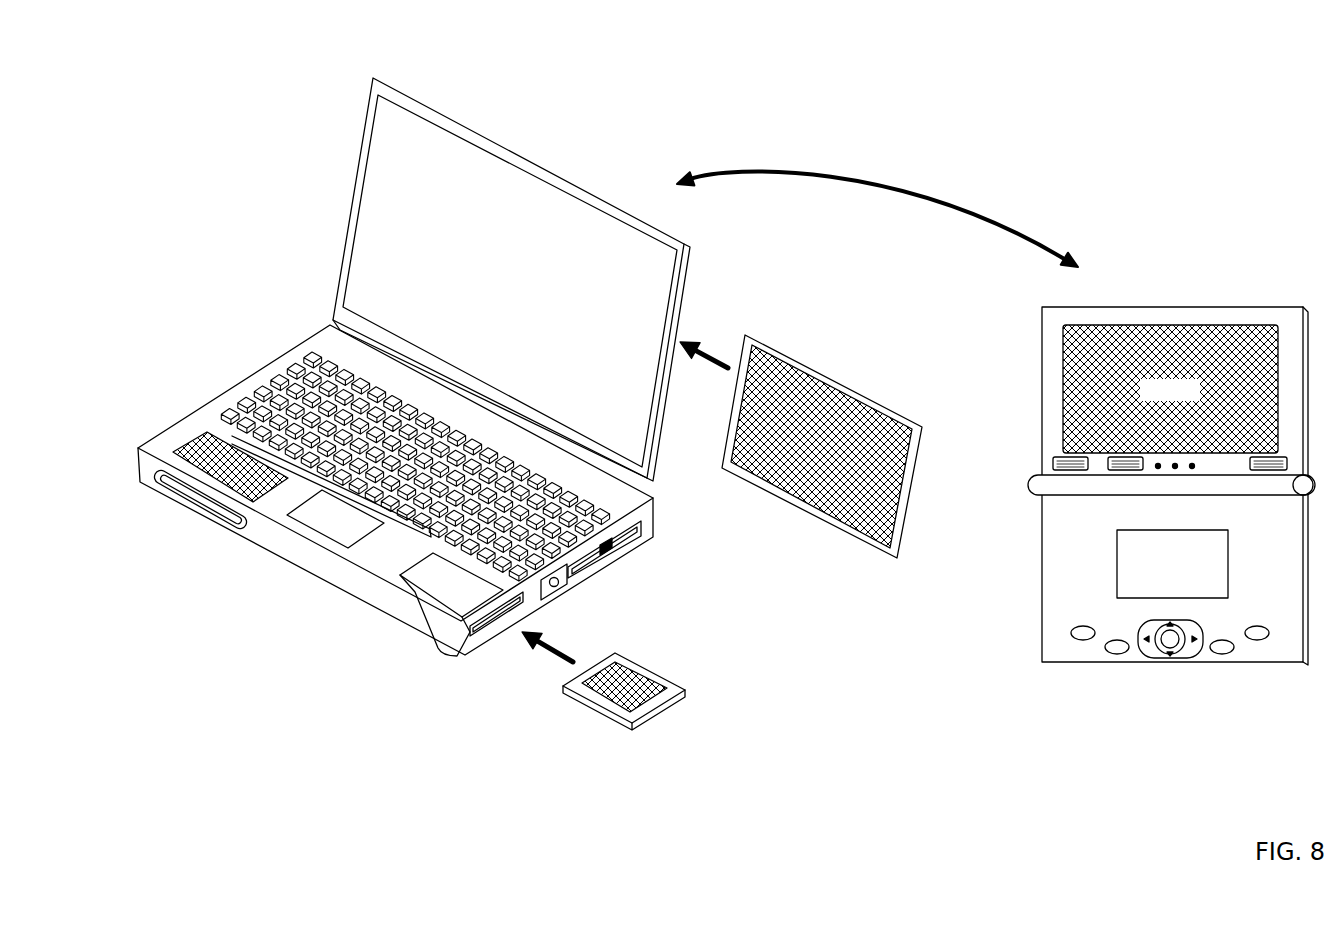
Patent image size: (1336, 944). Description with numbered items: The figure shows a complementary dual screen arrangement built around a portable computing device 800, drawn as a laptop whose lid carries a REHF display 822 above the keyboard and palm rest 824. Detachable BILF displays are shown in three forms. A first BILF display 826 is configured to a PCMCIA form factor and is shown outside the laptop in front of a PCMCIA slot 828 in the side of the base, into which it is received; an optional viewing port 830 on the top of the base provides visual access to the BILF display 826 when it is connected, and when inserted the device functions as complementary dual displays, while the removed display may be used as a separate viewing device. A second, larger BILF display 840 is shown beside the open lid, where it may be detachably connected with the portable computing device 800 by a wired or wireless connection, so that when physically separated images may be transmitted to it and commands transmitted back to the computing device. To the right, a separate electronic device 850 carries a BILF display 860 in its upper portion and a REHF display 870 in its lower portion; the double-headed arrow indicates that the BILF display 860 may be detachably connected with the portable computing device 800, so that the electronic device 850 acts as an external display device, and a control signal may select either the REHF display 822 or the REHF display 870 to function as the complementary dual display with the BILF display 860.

The portable computing device 800 is at (414, 442).
The REHF display 822 is at (363, 173).
The wireless antenna module 824 is at (270, 497).
The BILF display 826 is at (668, 708).
The PCMCIA slot 828 is at (472, 633).
The viewing port 830 is at (418, 596).
The BILF display 840 is at (917, 490).
The electronic device 850 is at (1171, 451).
The BILF display 860 is at (1170, 389).
The REHF display 870 is at (1172, 564).